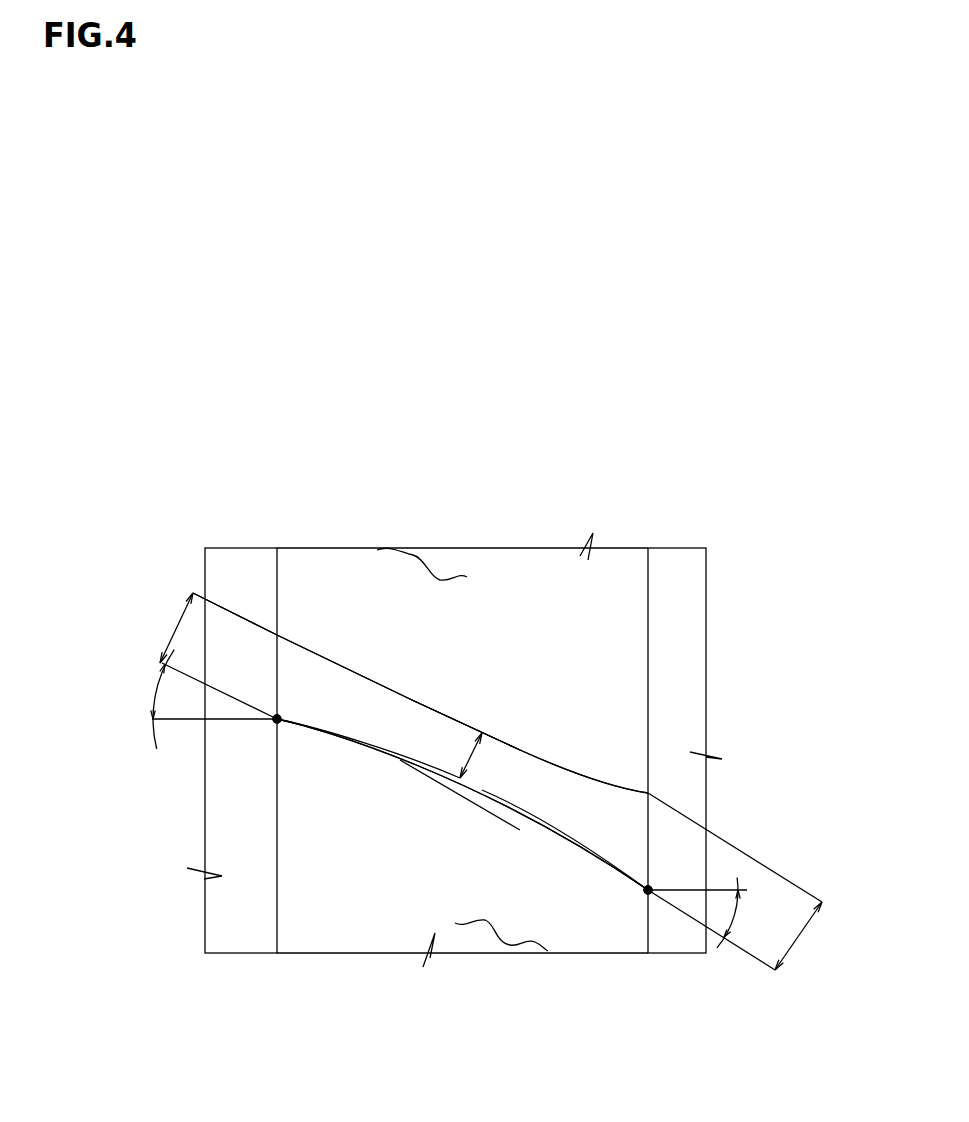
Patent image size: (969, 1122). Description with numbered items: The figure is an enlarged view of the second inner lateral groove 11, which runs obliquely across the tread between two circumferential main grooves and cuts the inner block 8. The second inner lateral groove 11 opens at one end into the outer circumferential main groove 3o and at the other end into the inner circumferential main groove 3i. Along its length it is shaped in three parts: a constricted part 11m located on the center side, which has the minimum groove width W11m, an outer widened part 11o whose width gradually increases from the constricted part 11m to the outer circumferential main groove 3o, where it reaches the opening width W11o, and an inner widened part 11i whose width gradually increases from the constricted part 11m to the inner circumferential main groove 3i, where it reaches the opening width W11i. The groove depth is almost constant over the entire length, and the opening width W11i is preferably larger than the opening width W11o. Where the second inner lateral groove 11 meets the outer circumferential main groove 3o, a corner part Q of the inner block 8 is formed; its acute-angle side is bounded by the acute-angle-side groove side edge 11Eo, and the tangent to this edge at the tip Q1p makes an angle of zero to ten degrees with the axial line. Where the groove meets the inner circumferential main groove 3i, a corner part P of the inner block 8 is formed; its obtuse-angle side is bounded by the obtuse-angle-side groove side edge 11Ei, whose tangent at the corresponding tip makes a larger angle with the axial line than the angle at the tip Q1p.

The second inner lateral groove 11 is at (340, 403).
The outer widened part 11o is at (320, 633).
The constricted part 11m is at (447, 708).
The inner widened part 11i is at (600, 760).
The inner block 8 is at (533, 593).
The outer circumferential main groove 3o is at (247, 590).
The inner circumferential main groove 3i is at (685, 588).
The acute-angle-side groove side edge 11Eo is at (412, 762).
The obtuse-angle-side groove side edge 11Ei is at (573, 843).
The opening width of the outer widened part W11o is at (147, 628).
The circumferential groove width of the constricted part W11m is at (490, 800).
The opening width of the inner widened part W11i is at (820, 936).
The tip of the acute-angle-side corner part Q1 Q1p is at (272, 727).
The corner part Q is at (285, 630).
The corner part P is at (641, 778).